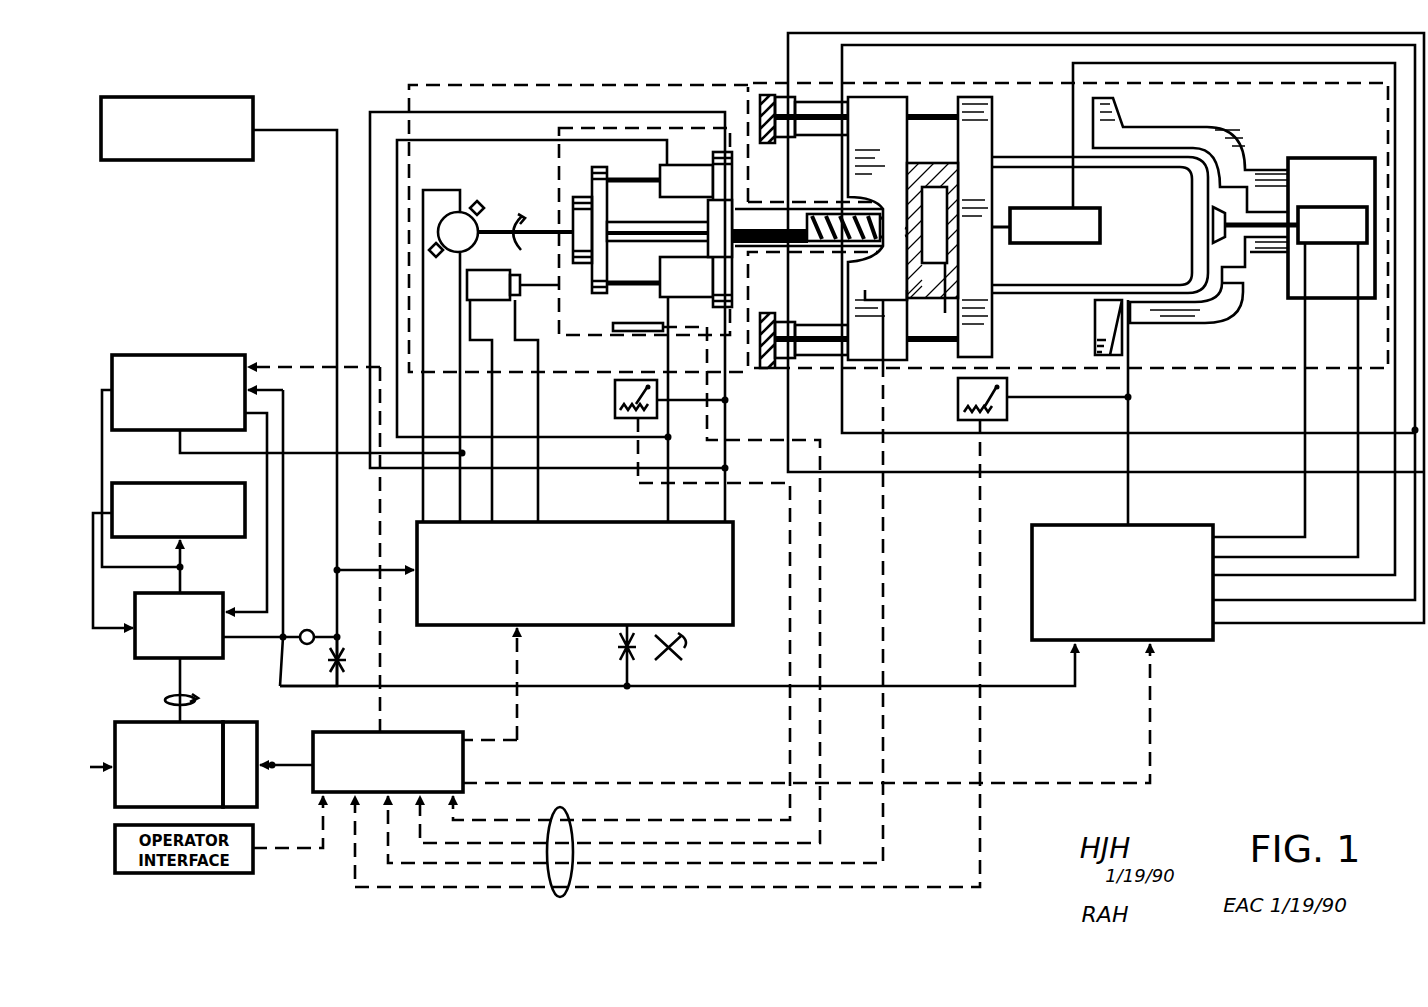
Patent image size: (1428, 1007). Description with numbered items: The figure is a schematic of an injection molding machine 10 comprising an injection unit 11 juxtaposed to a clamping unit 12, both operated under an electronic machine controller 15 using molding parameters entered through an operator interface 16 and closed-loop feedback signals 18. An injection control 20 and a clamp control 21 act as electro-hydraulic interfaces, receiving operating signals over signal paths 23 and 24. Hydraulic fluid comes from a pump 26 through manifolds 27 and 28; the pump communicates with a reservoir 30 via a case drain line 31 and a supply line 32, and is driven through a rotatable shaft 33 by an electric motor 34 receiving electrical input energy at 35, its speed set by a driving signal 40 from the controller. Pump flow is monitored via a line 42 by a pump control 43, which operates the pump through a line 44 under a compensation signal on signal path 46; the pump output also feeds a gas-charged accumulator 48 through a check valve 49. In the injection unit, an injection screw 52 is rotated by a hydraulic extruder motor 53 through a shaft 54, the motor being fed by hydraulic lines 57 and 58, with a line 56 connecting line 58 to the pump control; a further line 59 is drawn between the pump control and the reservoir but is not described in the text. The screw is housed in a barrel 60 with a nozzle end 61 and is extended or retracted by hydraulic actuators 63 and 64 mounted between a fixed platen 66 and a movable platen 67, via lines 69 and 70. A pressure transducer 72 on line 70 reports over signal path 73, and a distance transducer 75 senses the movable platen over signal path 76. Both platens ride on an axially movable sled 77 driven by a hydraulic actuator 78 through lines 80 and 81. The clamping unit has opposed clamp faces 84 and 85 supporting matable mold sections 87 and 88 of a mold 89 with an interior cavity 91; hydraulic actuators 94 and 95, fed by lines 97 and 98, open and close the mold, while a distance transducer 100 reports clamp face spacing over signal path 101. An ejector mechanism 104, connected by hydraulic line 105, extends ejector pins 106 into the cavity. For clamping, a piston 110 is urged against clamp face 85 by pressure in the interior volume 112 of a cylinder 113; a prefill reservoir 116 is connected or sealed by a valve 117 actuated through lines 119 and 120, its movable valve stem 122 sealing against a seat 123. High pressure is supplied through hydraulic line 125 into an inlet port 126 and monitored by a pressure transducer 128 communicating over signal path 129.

The injection molding machine 10 is at (1258, 735).
The injection unit 11 is at (530, 80).
The clamping unit 12 is at (980, 83).
The electronic machine controller 15 is at (405, 732).
The operator interface 16 is at (256, 830).
The feedback signals 18 is at (570, 818).
The injection control 20 is at (575, 573).
The clamp control 21 is at (1122, 582).
The multiple signal path 23 is at (522, 652).
The multiple signal path 24 is at (718, 684).
The pump 26 is at (179, 625).
The manifold 27 is at (358, 570).
The manifold 28 is at (1080, 660).
The reservoir 30 is at (178, 510).
The case drain line 31 is at (184, 572).
The supply line 32 is at (92, 592).
The rotatable shaft 33 is at (176, 676).
The electric motor 34 is at (186, 764).
The electrical input energy 35 is at (92, 766).
The driving signal 40 is at (286, 760).
The line 42 is at (285, 424).
The pump control 43 is at (178, 335).
The line 44 is at (270, 498).
The signal path 46 is at (322, 362).
The gas-charged accumulator 48 is at (219, 391).
The check valve 49 is at (300, 645).
The injection screw 52 is at (820, 208).
The hydraulic extruder motor 53 is at (480, 207).
The shaft 54 is at (532, 230).
The line 56 is at (180, 446).
The hydraulic line 57 is at (418, 302).
The hydraulic line 58 is at (443, 341).
The hydraulic line 59 is at (104, 470).
The barrel 60 is at (775, 262).
The nozzle end 61 is at (890, 250).
The hydraulic actuator 63 is at (680, 165).
The hydraulic actuator 64 is at (664, 306).
The fixed platen 66 is at (678, 216).
The platen 67 is at (606, 172).
The line 69 is at (590, 140).
The line 70 is at (672, 113).
The pressure transducer 72 is at (616, 412).
The signal path 73 is at (786, 494).
The distance transducer 75 is at (642, 332).
The signal path 76 is at (822, 510).
The axially movable sled 77 is at (555, 156).
The hydraulic actuator 78 is at (513, 273).
The line 80 is at (540, 410).
The line 81 is at (490, 414).
The clamp face 84 is at (910, 120).
The clamp face 85 is at (990, 125).
The mold section 87 is at (918, 178).
The mold section 88 is at (945, 298).
The mold 89 is at (945, 192).
The interior cavity 91 is at (960, 195).
The hydraulic actuator 94 is at (795, 140).
The hydraulic actuator 95 is at (838, 322).
The line 97 is at (842, 67).
The line 98 is at (788, 67).
The distance transducer 100 is at (888, 365).
The signal path 101 is at (886, 512).
The ejector mechanism 104 is at (1112, 216).
The hydraulic line 105 is at (1076, 192).
The ejector pin 106 is at (1010, 245).
The piston 110 is at (1012, 296).
The interior volume 112 is at (1220, 257).
The cylinder 113 is at (1162, 127).
The prefill reservoir 116 is at (1331, 228).
The valve 117 is at (1328, 246).
The line 119 is at (1302, 334).
The line 120 is at (1358, 338).
The movable valve stem 122 is at (1213, 228).
The seat 123 is at (1248, 195).
The hydraulic line 125 is at (1138, 410).
The inlet port 126 is at (1135, 335).
The pressure transducer 128 is at (1018, 412).
The signal path 129 is at (983, 510).